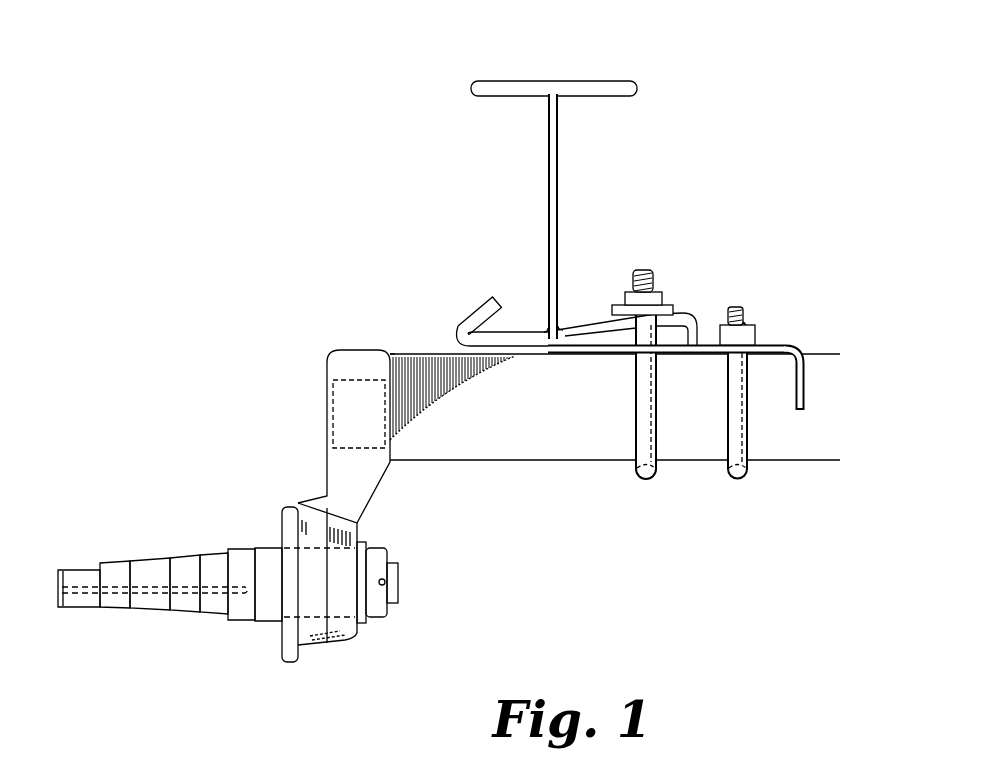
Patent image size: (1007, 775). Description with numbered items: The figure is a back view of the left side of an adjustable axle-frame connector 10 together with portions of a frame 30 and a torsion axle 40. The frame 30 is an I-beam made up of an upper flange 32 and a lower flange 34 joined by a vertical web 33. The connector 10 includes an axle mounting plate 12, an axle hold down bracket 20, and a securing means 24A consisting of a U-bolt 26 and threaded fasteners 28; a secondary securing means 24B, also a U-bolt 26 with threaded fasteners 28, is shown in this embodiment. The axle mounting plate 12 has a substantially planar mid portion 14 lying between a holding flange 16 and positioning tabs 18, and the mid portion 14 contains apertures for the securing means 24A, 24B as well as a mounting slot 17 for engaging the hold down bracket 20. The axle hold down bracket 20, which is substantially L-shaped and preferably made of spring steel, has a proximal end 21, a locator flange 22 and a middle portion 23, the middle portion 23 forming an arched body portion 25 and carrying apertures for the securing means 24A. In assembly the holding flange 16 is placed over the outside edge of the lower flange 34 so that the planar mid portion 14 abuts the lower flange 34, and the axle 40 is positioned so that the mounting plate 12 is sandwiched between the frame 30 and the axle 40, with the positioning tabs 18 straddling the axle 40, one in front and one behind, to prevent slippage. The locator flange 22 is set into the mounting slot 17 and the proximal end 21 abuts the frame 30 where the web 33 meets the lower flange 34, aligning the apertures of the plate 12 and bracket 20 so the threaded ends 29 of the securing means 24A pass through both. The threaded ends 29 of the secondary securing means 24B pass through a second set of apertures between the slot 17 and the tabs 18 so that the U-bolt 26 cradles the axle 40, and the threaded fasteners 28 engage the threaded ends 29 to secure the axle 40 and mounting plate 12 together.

The adjustable axle-frame connector 10 is at (476, 337).
The axle mounting plate 12 is at (493, 373).
The substantially planar mid portion 14 is at (625, 347).
The holding flange 16 is at (487, 312).
The mounting slot 17 is at (682, 348).
The positioning tabs 18 is at (800, 385).
The axle hold down bracket 20 is at (683, 315).
The proximal end 21 is at (566, 322).
The locator flange 22 is at (690, 340).
The middle portion 23 is at (645, 317).
The securing means 24A is at (665, 485).
The secondary securing means 24B is at (760, 482).
The arched body portion 25 is at (623, 318).
The U-bolt 26 is at (738, 413).
The threaded fasteners 28 is at (647, 297).
The threaded ends 29 is at (640, 272).
The frame 30 is at (518, 217).
The upper flange 32 is at (553, 95).
The vertical web 33 is at (555, 188).
The lower flange 34 is at (557, 338).
The torsion axle 40 is at (525, 523).